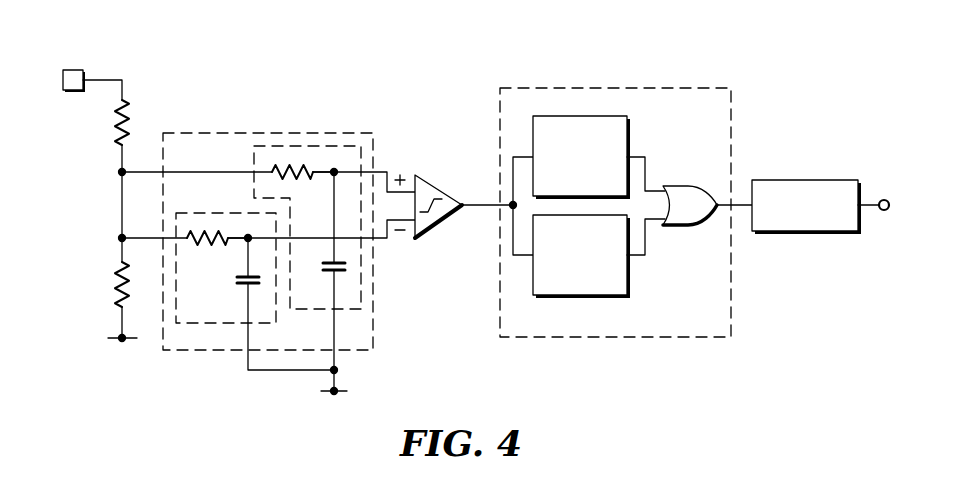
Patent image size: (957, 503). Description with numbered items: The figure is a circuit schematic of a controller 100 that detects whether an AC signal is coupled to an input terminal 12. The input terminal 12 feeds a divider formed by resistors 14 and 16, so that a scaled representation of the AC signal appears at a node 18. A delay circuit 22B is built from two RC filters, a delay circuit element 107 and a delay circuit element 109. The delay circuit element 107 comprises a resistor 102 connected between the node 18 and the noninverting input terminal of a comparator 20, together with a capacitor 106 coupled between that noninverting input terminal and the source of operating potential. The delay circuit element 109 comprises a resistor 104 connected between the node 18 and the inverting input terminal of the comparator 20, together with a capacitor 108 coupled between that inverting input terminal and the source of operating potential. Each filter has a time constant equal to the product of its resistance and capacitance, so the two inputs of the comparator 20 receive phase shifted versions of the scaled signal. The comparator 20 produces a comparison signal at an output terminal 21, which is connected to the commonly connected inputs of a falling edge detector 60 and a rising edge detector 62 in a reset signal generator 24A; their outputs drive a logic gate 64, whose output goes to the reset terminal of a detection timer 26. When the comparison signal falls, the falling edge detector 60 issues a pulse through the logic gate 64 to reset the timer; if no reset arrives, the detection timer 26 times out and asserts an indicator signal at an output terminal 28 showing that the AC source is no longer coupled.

The input terminal 12 is at (73, 69).
The resistor 14 is at (128, 118).
The resistor 16 is at (120, 272).
The node 18 is at (122, 202).
The comparator 20 is at (432, 241).
The output terminal 21 is at (474, 205).
The delay circuit 22B is at (340, 133).
The reset signal generator 24A is at (657, 337).
The detection timer 26 is at (808, 178).
The output terminal 28 is at (884, 198).
The falling edge detector 60 is at (598, 116).
The rising edge detector 62 is at (608, 297).
The logic gate 64 is at (688, 228).
The controller 100 is at (438, 384).
The resistor 102 is at (290, 180).
The resistor 104 is at (206, 246).
The capacitor 106 is at (326, 270).
The delay circuit element 107 is at (289, 309).
The capacitor 108 is at (238, 284).
The delay circuit element 109 is at (225, 212).